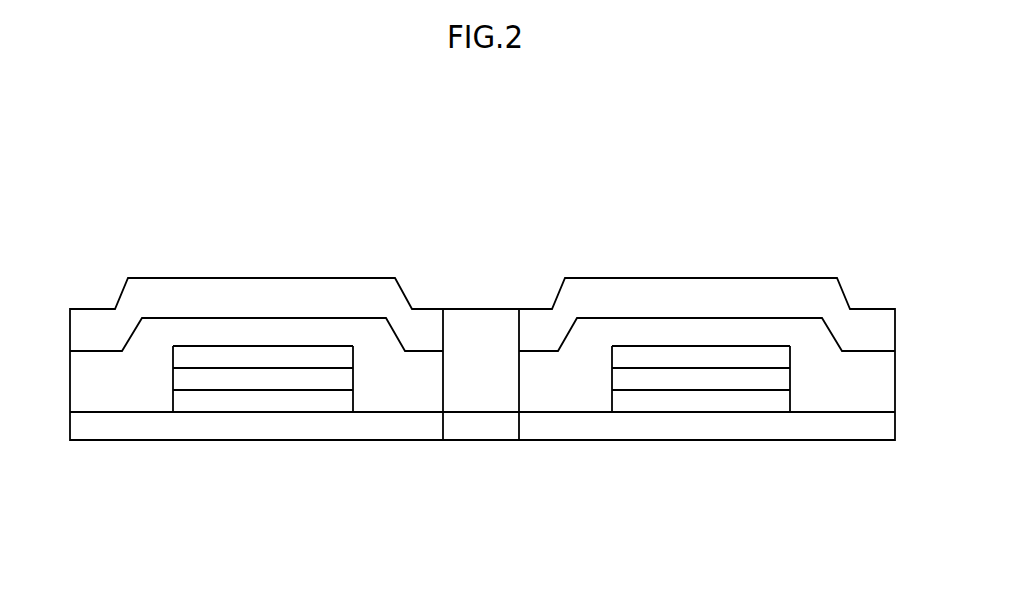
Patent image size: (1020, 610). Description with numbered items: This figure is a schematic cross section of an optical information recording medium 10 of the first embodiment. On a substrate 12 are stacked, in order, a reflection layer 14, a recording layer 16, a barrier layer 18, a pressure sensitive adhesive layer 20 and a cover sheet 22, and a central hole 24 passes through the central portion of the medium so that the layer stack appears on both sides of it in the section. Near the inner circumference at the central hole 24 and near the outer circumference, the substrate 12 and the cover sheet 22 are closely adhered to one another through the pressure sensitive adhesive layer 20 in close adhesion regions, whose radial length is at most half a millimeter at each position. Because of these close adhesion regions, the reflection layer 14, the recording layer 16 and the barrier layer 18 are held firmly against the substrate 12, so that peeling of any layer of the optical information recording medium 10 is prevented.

The optical information recording medium 10 is at (728, 222).
The substrate 12 is at (147, 430).
The reflection layer 14 is at (215, 400).
The recording layer 16 is at (263, 380).
The barrier layer 18 is at (300, 356).
The pressure sensitive adhesive layer 20 is at (372, 337).
The cover sheet 22 is at (232, 300).
The central hole 24 is at (445, 375).